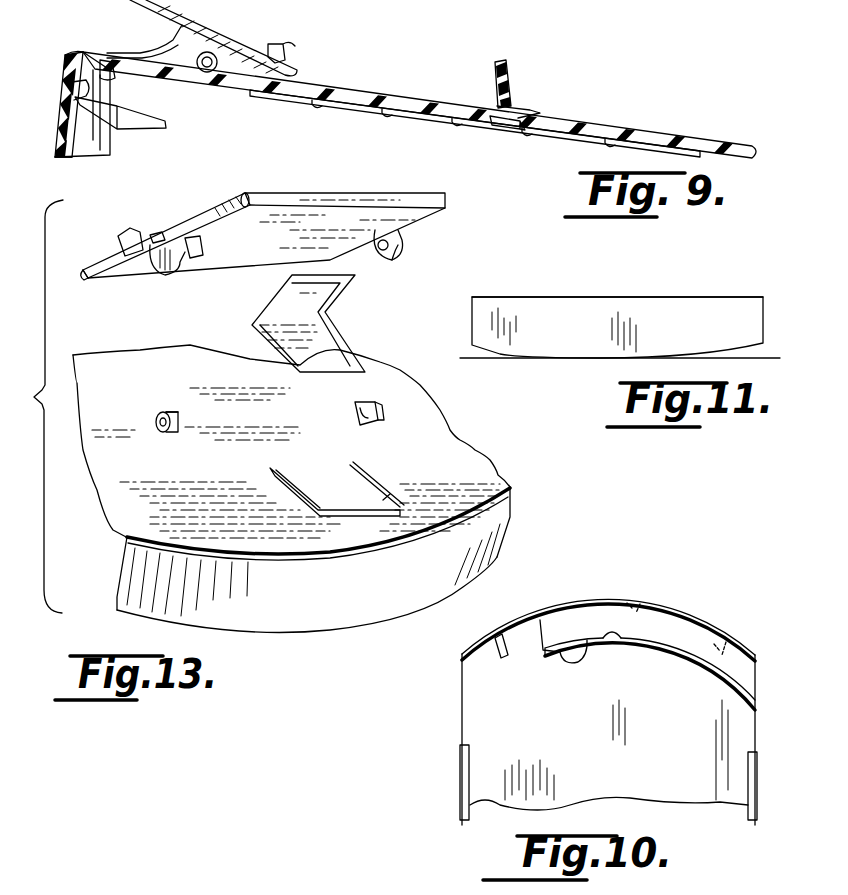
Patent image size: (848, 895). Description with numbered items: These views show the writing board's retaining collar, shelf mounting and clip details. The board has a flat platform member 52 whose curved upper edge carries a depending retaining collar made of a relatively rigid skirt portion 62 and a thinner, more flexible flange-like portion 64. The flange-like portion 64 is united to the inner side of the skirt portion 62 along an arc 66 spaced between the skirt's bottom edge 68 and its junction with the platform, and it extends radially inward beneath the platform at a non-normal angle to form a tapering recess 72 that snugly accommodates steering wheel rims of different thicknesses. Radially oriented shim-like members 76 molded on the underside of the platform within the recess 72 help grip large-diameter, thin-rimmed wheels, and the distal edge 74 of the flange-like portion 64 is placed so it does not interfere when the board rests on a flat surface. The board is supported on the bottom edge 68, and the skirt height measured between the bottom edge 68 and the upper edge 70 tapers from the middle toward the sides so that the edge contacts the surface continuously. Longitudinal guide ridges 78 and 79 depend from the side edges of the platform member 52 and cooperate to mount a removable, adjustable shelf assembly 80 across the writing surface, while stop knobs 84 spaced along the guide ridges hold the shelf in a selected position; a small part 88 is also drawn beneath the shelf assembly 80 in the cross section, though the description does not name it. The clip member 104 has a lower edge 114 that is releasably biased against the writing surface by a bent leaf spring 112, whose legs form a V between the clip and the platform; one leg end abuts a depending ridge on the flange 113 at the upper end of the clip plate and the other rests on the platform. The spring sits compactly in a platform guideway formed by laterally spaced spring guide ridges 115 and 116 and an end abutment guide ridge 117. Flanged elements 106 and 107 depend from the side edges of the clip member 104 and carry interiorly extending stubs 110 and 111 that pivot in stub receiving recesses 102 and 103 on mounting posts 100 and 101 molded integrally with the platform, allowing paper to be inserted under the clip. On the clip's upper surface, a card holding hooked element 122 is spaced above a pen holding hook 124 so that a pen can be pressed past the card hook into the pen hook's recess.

In FIG. 9, the platform member 52 is at (362, 94).
In FIG. 13, the platform member 52 is at (115, 393).
In FIG. 10, the platform member 52 is at (618, 763).
In FIG. 9, the skirt portion 62 is at (53, 120).
In FIG. 11, the skirt portion 62 is at (676, 325).
In FIG. 10, the skirt portion 62 is at (658, 612).
In FIG. 9, the flange-like portion 64 is at (108, 135).
In FIG. 10, the flange-like portion 64 is at (680, 632).
In FIG. 9, the arc 66 is at (58, 90).
In FIG. 9, the bottom edge 68 is at (55, 159).
In FIG. 11, the bottom edge 68 is at (503, 358).
In FIG. 9, the upper edge 70 is at (64, 56).
In FIG. 11, the upper edge 70 is at (580, 298).
In FIG. 9, the tapering recess 72 is at (195, 103).
In FIG. 10, the distal edge 74 is at (558, 650).
In FIG. 9, the shim-like members 76 is at (114, 74).
In FIG. 10, the shim-like members 76 is at (496, 648).
In FIG. 9, the guide ridge 78 is at (300, 100).
In FIG. 10, the guide ridge 78 is at (460, 775).
In FIG. 10, the guide ridge 79 is at (757, 790).
In FIG. 9, the shelf assembly 80 is at (508, 70).
In FIG. 9, the stop knobs 84 is at (317, 104).
In FIG. 9, the bracket 88 is at (516, 130).
In FIG. 13, the mounting post 100 is at (180, 412).
In FIG. 13, the mounting post 101 is at (380, 403).
In FIG. 13, the stub receiving recess 102 is at (157, 428).
In FIG. 13, the stub receiving recess 103 is at (358, 425).
In FIG. 13, the clip member 104 is at (215, 210).
In FIG. 13, the flanged element 106 is at (168, 276).
In FIG. 13, the flanged element 107 is at (402, 242).
In FIG. 13, the stub 110 is at (202, 252).
In FIG. 13, the stub 111 is at (395, 258).
In FIG. 9, the leaf spring 112 is at (148, 52).
In FIG. 13, the leaf spring 112 is at (330, 345).
In FIG. 13, the flange 113 is at (300, 205).
In FIG. 13, the lower edge 114 is at (133, 274).
In FIG. 13, the spring guide ridge 115 is at (300, 510).
In FIG. 13, the spring guide ridge 116 is at (385, 500).
In FIG. 13, the end abutment guide ridge 117 is at (370, 515).
In FIG. 9, the card holding hooked element 122 is at (245, 45).
In FIG. 13, the card holding hooked element 122 is at (155, 232).
In FIG. 9, the pen holding hook 124 is at (290, 52).
In FIG. 13, the pen holding hook 124 is at (118, 237).